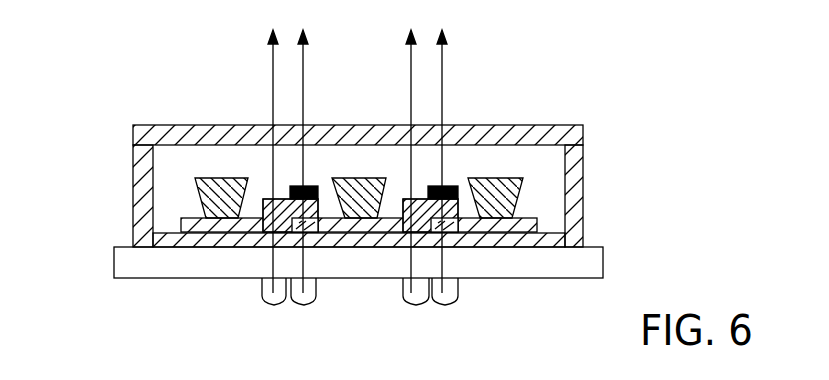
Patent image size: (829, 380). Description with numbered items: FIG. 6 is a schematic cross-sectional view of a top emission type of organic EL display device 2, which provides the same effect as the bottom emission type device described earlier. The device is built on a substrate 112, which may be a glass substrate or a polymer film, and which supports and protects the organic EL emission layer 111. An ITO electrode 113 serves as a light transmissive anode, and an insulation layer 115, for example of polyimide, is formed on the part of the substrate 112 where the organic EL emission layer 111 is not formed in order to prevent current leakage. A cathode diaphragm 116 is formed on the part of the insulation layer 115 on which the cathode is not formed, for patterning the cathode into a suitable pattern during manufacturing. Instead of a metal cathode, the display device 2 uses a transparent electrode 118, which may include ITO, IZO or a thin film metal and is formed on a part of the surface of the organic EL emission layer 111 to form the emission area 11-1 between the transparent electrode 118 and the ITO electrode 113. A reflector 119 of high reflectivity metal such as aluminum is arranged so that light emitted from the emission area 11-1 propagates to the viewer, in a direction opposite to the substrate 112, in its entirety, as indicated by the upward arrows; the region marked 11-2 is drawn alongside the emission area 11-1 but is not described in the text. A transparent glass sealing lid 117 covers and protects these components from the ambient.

The display device 2 is at (677, 40).
The emission area 11-1 is at (304, 305).
The lead terminal 11-2 is at (274, 305).
The organic EL emission layer 111 is at (266, 193).
The substrate 112 is at (603, 250).
The ITO electrode 113 is at (168, 233).
The insulation layer 115 is at (188, 218).
The cathode diaphragm 116 is at (497, 184).
The transparent glass sealing lid 117 is at (567, 125).
The transparent electrode 118 is at (295, 186).
The reflector 119 is at (318, 220).